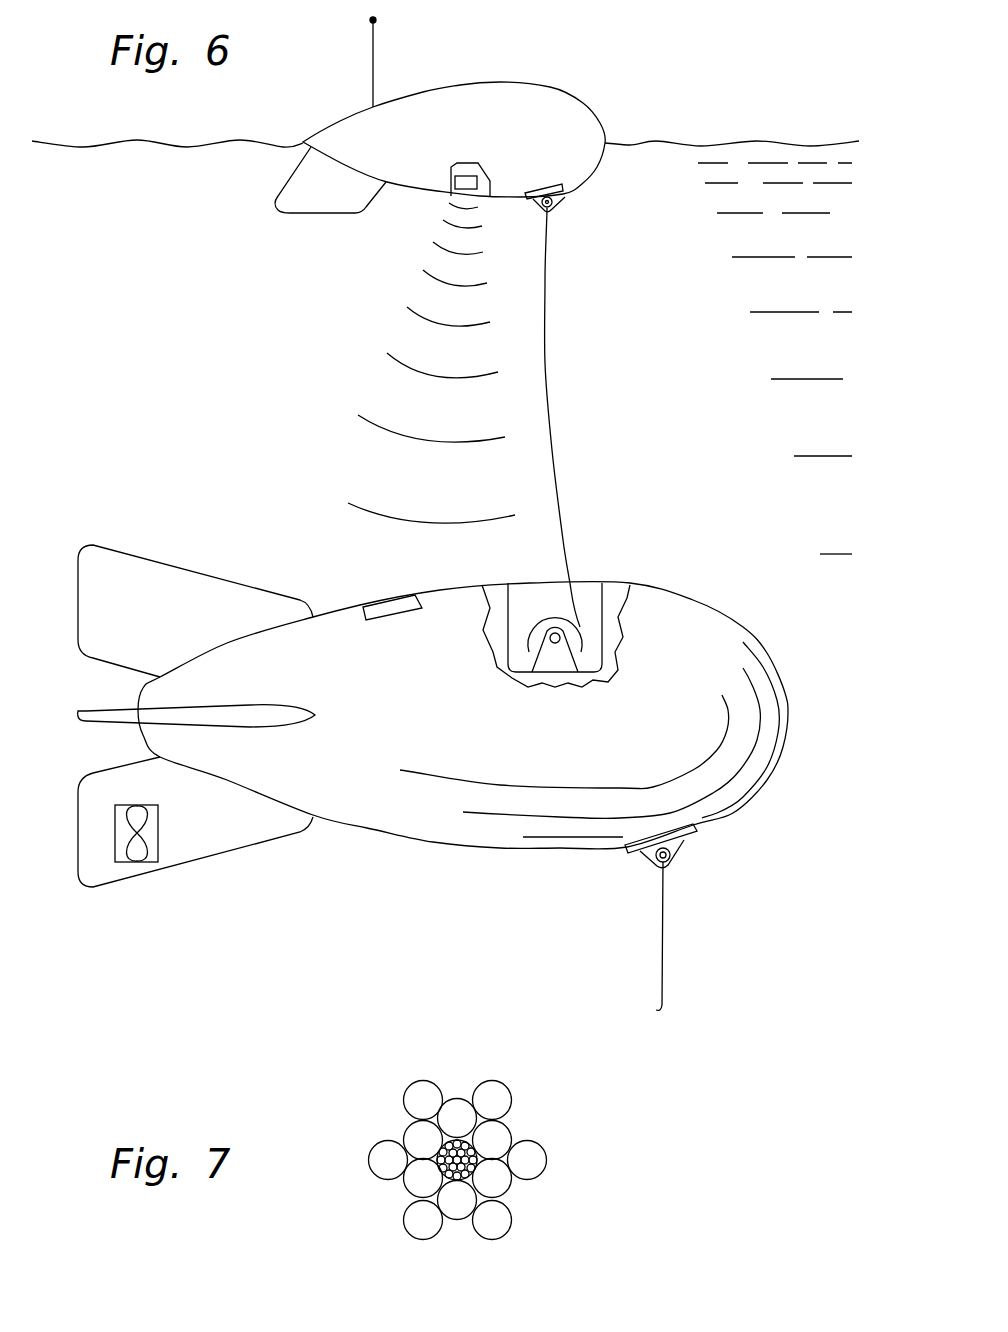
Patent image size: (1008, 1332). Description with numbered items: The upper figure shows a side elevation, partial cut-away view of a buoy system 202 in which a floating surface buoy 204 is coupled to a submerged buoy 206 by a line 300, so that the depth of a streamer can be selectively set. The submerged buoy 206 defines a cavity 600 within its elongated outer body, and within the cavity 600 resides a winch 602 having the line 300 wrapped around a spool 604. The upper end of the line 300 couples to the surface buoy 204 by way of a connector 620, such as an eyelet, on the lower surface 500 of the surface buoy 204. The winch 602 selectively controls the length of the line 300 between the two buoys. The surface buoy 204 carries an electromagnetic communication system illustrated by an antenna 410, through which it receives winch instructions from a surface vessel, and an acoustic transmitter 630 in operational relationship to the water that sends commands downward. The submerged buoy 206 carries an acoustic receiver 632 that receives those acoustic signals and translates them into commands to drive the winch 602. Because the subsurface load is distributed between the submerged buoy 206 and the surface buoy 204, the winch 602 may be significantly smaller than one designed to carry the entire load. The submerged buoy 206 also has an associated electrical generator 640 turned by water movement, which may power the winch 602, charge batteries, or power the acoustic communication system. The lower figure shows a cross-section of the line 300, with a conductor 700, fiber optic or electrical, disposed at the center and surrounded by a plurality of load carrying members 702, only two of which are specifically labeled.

In FIG. 6, the buoy system 202 is at (475, 265).
In FIG. 6, the surface buoy 204 is at (573, 107).
In FIG. 6, the submerged buoy 206 is at (433, 767).
In FIG. 6, the line 300 is at (547, 363).
In FIG. 7, the line 300 is at (475, 1146).
In FIG. 6, the antenna 410 is at (370, 20).
In FIG. 6, the lower surface 500 is at (607, 417).
In FIG. 6, the cavity 600 is at (551, 606).
In FIG. 6, the winch 602 is at (533, 608).
In FIG. 6, the spool 604 is at (553, 618).
In FIG. 6, the connector 620 is at (566, 200).
In FIG. 6, the acoustic transmitter 630 is at (467, 165).
In FIG. 6, the acoustic receiver 632 is at (388, 597).
In FIG. 6, the electrical generator 640 is at (143, 838).
In FIG. 7, the conductor 700 is at (462, 1163).
In FIG. 7, the load carrying members 702 is at (418, 1083).